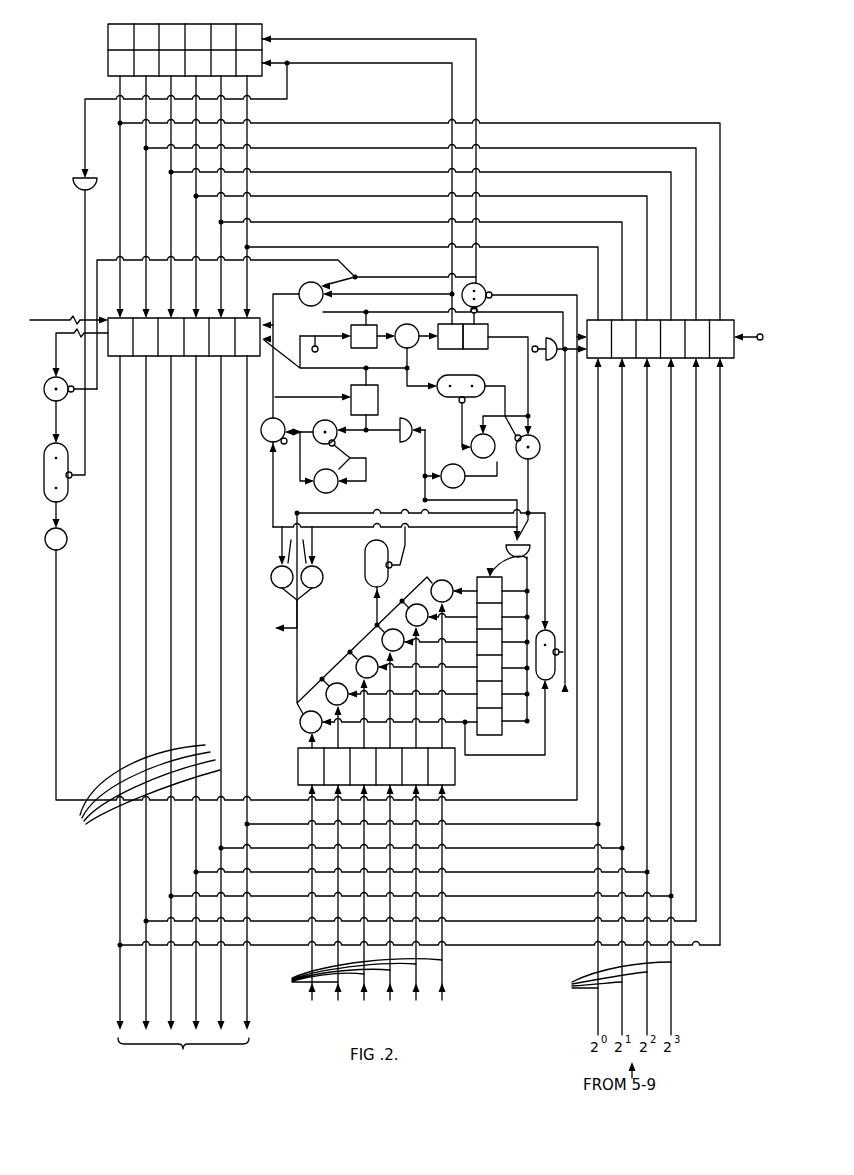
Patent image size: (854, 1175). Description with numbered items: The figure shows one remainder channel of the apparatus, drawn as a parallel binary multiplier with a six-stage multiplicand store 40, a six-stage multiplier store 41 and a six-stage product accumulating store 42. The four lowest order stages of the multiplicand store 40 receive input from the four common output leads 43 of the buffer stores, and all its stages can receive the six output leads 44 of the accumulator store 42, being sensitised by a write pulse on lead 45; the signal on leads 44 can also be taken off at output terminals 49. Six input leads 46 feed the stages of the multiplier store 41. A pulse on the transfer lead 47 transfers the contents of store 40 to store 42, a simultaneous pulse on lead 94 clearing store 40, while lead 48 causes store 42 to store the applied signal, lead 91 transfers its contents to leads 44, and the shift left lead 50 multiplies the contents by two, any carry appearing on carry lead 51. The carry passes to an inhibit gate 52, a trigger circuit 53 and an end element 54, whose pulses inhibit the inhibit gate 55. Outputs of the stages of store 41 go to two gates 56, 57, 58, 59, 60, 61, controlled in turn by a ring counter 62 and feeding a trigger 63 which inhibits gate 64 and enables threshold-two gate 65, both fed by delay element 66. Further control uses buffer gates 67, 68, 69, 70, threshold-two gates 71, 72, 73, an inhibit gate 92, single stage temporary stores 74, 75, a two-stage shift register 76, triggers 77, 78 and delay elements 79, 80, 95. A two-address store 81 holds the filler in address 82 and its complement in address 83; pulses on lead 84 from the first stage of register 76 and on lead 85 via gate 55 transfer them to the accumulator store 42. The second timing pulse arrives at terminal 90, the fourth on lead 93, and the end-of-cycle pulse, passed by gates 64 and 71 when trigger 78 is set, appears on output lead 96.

The multiplicand store 40 is at (730, 318).
The multiplier store 41 is at (457, 768).
The product accumulating store 42 is at (118, 358).
The common output leads 43 is at (636, 696).
The output leads 44 is at (147, 792).
The write pulse lead 45 is at (754, 347).
The input leads 46 is at (357, 892).
The transfer pulse input lead 47 is at (548, 313).
The input lead 48 is at (286, 308).
The output terminals 49 is at (184, 712).
The shift left lead 50 is at (282, 358).
The carry lead 51 is at (56, 364).
The inhibit gate 52 is at (50, 404).
The trigger circuit 53 is at (68, 503).
The end element 54 is at (67, 548).
The inhibit gate 55 is at (487, 284).
The two gate 56 is at (299, 726).
The two gate 57 is at (330, 683).
The two gate 58 is at (360, 656).
The two gate 59 is at (394, 628).
The two gate 60 is at (420, 603).
The two gate 61 is at (448, 580).
The ring counter 62 is at (490, 735).
The trigger 63 is at (365, 557).
The inhibit gate 64 is at (325, 420).
The threshold-two gate 65 is at (334, 484).
The delay element 66 is at (404, 443).
The buffer gate 67 is at (463, 484).
The buffer gate 68 is at (418, 344).
The buffer gate 69 is at (312, 306).
The buffer gate 70 is at (268, 441).
The threshold-two gate 71 is at (276, 588).
The threshold-two gate 72 is at (310, 588).
The threshold-two gate 73 is at (490, 456).
The single stage temporary store 74 is at (377, 344).
The single stage temporary store 75 is at (378, 400).
The two-stage shift register 76 is at (488, 346).
The trigger 77 is at (468, 349).
The trigger 78 is at (556, 640).
The delay element 79 is at (506, 549).
The delay element 80 is at (78, 190).
The two-address store 81 is at (262, 27).
The address 82 is at (108, 66).
The address 83 is at (108, 40).
The lead 84 is at (352, 65).
The lead 85 is at (374, 38).
The terminal 90 is at (325, 348).
The transfer lead 91 is at (69, 312).
The inhibit gate 92 is at (536, 458).
The lead 93 is at (449, 462).
The lead 94 is at (521, 386).
The delay element 95 is at (552, 360).
The output lead 96 is at (277, 626).